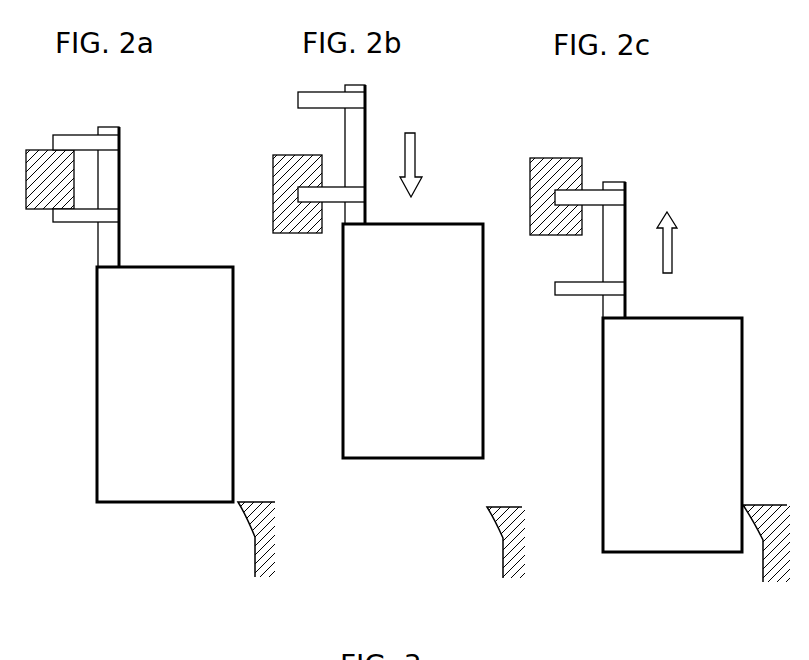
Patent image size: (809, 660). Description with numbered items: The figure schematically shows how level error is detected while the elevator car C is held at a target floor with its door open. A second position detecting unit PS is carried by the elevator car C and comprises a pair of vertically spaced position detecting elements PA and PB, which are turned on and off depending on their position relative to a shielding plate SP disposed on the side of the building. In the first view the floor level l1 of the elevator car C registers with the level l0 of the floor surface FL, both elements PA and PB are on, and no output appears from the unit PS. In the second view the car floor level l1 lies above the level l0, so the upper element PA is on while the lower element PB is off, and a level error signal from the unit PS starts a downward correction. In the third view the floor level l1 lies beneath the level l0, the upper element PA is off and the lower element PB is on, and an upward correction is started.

In FIG. 2a, the shielding plate SP is at (40, 150).
In FIG. 2b, the shielding plate SP is at (295, 155).
In FIG. 2c, the shielding plate SP is at (553, 158).
In FIG. 2a, the upper position detecting element PA is at (75, 135).
In FIG. 2b, the upper position detecting element PA is at (298, 100).
In FIG. 2c, the upper position detecting element PA is at (595, 190).
In FIG. 2a, the lower position detecting element PB is at (72, 222).
In FIG. 2b, the lower position detecting element PB is at (332, 202).
In FIG. 2c, the lower position detecting element PB is at (567, 295).
In FIG. 2a, the second position detecting unit PS is at (152, 123).
In FIG. 2b, the second position detecting unit PS is at (407, 108).
In FIG. 2c, the second position detecting unit PS is at (662, 185).
In FIG. 2a, the elevator car C is at (165, 384).
In FIG. 2b, the elevator car C is at (413, 341).
In FIG. 2c, the elevator car C is at (672, 435).
In FIG. 2a, the floor surface FL is at (268, 503).
In FIG. 2b, the floor surface FL is at (510, 506).
In FIG. 2c, the floor surface FL is at (763, 505).
In FIG. 2a, the level of the floor surface l0 is at (240, 502).
In FIG. 2b, the level of the floor surface l0 is at (463, 507).
In FIG. 2c, the level of the floor surface l0 is at (733, 508).
In FIG. 2a, the floor level of the elevator car l1 is at (79, 502).
In FIG. 2b, the floor level of the elevator car l1 is at (494, 459).
In FIG. 2c, the floor level of the elevator car l1 is at (745, 552).